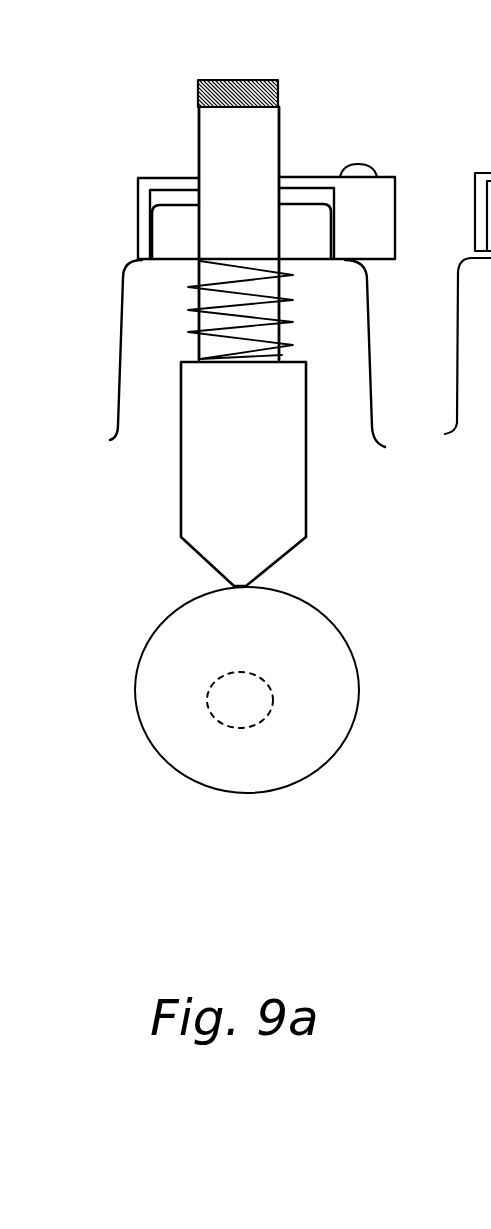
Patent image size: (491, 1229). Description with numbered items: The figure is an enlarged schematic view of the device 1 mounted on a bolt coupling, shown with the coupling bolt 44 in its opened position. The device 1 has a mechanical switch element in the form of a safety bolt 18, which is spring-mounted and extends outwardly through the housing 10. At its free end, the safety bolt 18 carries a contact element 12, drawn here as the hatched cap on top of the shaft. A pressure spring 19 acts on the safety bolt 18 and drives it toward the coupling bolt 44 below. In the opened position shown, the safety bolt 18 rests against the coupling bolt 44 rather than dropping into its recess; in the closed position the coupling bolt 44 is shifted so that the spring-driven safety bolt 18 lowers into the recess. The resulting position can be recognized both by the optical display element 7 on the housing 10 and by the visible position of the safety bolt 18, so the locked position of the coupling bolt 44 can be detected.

The device 1 is at (398, 198).
The optical display element 7 is at (360, 171).
The housing 10 is at (305, 179).
The contact element 12 is at (260, 84).
The safety bolt 18 is at (217, 522).
The pressure spring 19 is at (218, 310).
The coupling bolt 44 is at (273, 763).